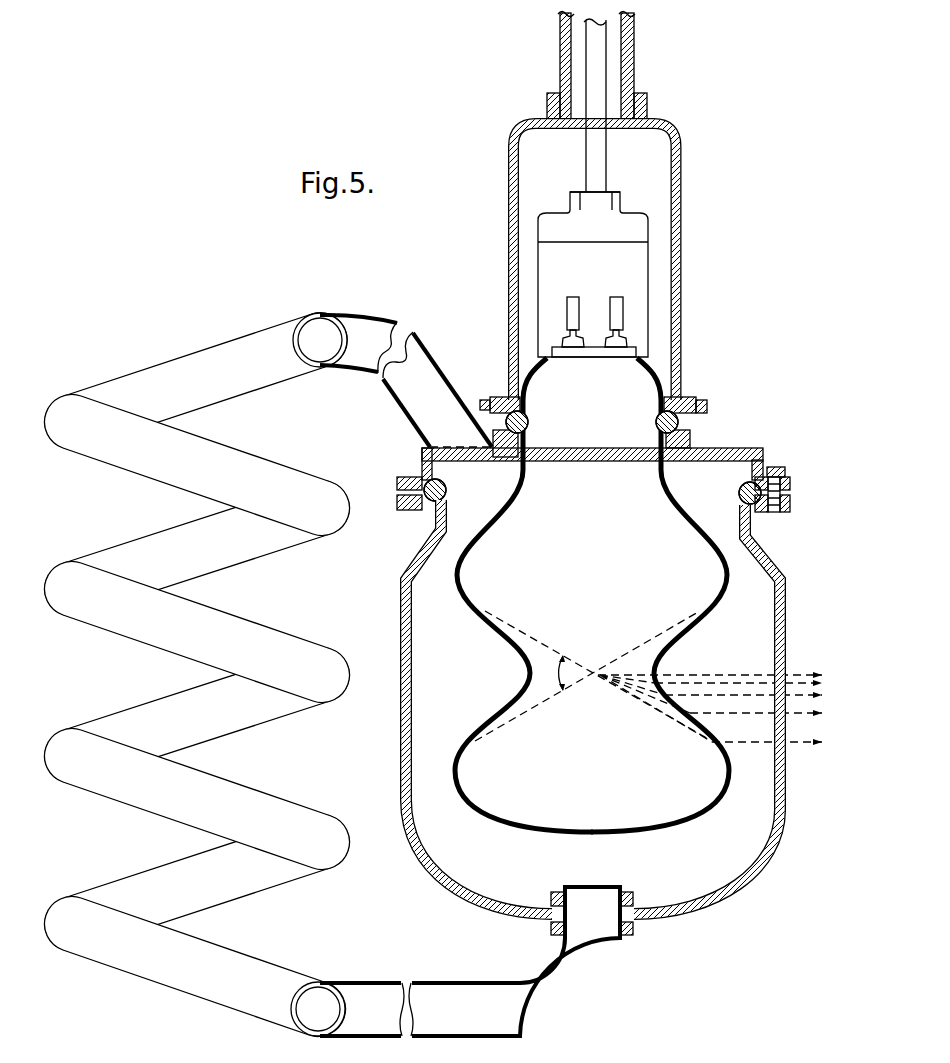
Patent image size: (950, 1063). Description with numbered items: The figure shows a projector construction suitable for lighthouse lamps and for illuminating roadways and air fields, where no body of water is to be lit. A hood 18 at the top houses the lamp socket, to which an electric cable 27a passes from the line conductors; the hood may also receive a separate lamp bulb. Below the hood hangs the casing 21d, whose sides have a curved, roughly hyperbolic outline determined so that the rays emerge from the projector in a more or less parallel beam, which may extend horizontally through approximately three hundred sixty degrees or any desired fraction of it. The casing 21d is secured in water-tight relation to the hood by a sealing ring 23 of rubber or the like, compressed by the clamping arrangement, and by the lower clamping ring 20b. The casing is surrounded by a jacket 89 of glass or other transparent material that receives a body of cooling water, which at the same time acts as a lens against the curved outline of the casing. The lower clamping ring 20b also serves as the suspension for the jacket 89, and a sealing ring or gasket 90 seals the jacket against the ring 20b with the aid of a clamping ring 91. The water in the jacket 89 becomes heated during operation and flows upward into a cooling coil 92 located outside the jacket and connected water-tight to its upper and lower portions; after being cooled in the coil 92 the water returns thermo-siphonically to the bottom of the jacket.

The cooling coil 92 is at (279, 471).
The hood 18 is at (683, 328).
The electric cable 27a is at (600, 163).
The casing 21d is at (697, 626).
The sealing ring 23 is at (657, 430).
The lower clamping ring 20b is at (718, 448).
The sealing ring or gasket 90 is at (735, 497).
The clamping ring 91 is at (787, 506).
The jacket 89 is at (787, 612).